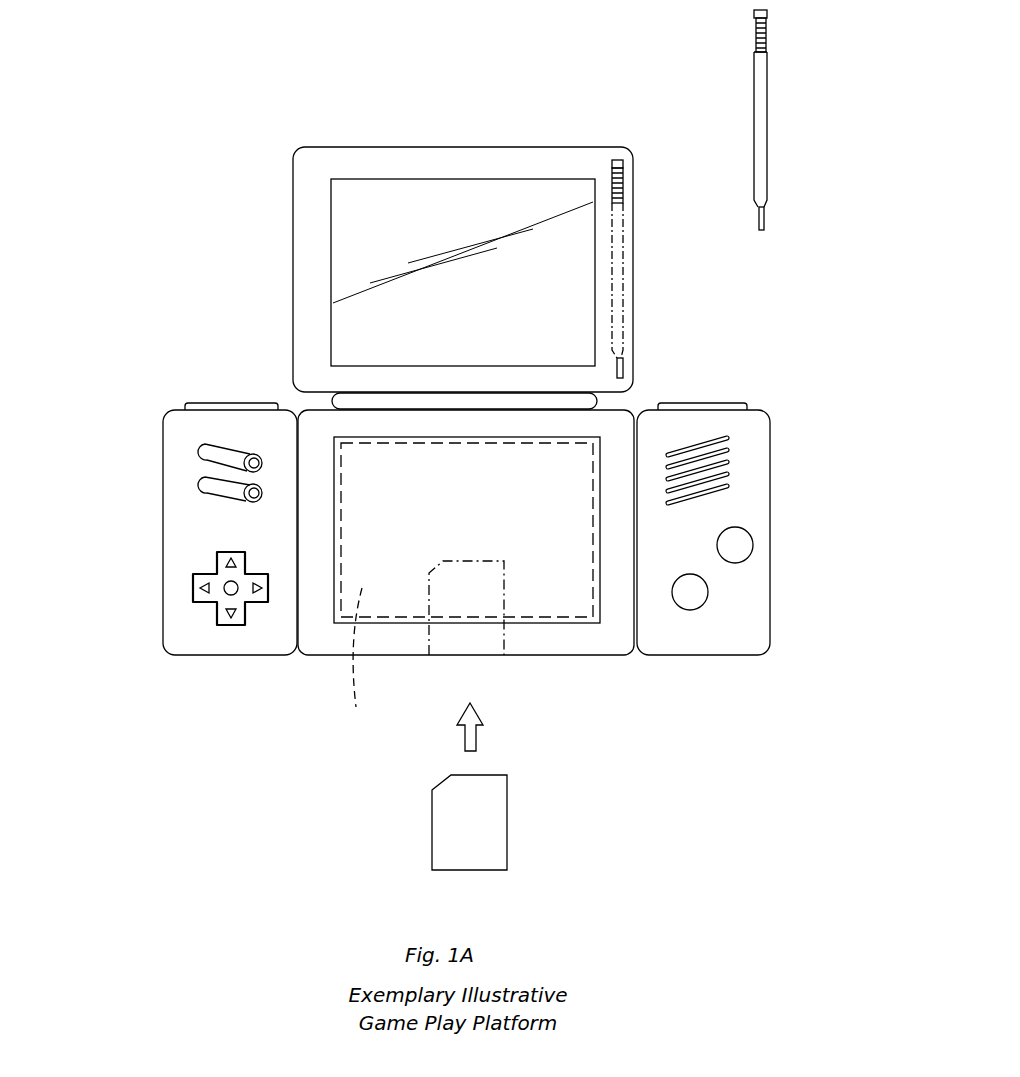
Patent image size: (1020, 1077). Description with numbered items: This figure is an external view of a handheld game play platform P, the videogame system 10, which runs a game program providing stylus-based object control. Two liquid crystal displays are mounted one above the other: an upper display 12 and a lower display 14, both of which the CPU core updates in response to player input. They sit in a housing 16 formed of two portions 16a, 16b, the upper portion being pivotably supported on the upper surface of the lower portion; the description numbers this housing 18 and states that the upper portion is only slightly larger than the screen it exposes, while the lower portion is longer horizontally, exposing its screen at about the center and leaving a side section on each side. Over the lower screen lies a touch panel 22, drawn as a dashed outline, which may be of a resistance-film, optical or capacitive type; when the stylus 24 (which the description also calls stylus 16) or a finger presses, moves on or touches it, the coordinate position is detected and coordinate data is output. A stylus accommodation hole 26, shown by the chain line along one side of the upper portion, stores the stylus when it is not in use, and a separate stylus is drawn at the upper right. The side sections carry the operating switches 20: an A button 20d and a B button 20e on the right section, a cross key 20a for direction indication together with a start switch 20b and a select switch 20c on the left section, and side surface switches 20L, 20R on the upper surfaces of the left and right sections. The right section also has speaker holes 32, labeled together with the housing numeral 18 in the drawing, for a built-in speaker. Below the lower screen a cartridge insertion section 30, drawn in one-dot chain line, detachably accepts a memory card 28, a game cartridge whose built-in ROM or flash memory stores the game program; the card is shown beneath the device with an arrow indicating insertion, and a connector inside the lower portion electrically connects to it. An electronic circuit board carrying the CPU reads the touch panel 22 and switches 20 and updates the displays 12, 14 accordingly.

The game play platform P is at (256, 129).
The videogame system 10 is at (378, 32).
The second LCD 12 is at (352, 238).
The display 14 is at (573, 625).
The stylus 16 is at (735, 293).
The upper housing 16a is at (633, 318).
The lower housing 16b is at (625, 408).
The housing 18 is at (727, 463).
The speaker grille 32 is at (697, 470).
The operating switch 20 is at (178, 424).
The left shoulder button 20L is at (232, 403).
The right shoulder button 20R is at (720, 403).
The cross switch / directional pad 20a is at (193, 587).
The start button 20b is at (202, 459).
The select button 20c is at (225, 497).
The A button 20d is at (753, 541).
The B button 20e is at (708, 592).
The touch screen 22 is at (348, 664).
The stylus 24 is at (767, 112).
The stylus holder 26 is at (618, 220).
The memory card 28 is at (507, 813).
The card slot 30 is at (478, 660).